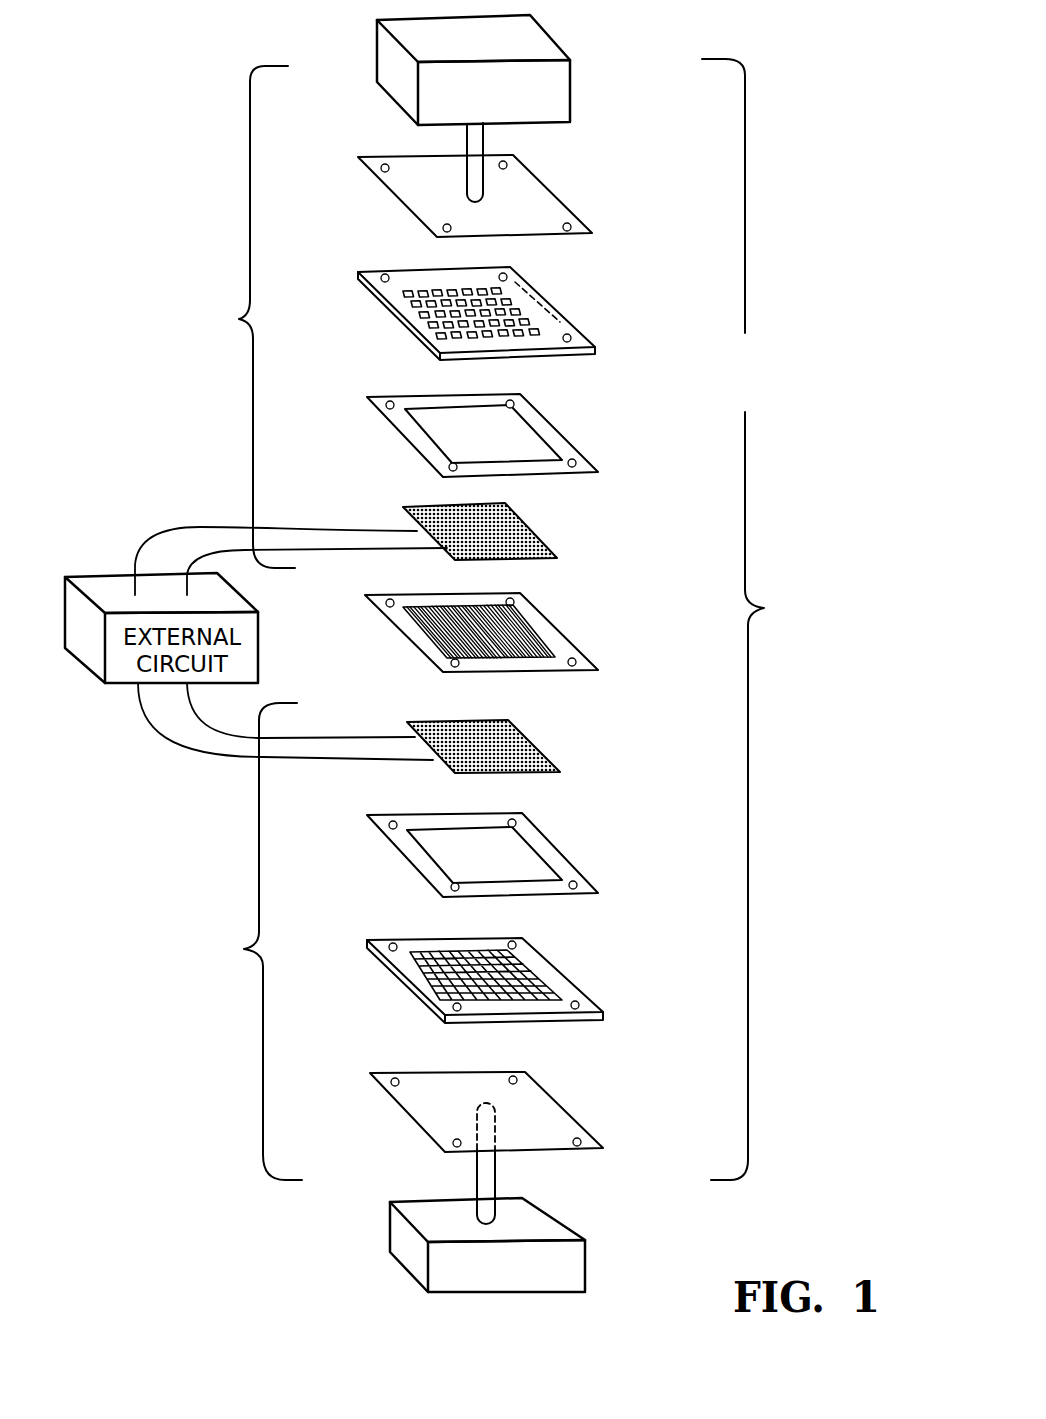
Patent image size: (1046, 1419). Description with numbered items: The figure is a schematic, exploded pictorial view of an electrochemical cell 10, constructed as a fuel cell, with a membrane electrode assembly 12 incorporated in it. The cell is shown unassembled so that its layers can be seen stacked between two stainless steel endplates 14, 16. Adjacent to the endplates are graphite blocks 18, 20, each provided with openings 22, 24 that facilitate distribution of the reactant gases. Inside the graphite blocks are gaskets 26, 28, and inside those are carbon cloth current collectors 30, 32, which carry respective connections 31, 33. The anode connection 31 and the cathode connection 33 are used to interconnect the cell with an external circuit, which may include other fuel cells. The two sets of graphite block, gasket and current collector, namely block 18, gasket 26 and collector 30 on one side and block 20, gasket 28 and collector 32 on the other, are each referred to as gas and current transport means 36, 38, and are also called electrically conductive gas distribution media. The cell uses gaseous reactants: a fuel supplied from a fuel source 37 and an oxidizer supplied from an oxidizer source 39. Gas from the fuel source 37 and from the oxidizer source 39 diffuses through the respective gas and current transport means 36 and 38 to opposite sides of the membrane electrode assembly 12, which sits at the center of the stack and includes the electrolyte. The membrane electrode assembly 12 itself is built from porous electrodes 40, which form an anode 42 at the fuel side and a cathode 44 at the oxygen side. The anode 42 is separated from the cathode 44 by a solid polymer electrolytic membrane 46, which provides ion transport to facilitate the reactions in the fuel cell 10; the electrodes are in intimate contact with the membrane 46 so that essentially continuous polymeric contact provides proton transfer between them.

The electrochemical cell 10 is at (764, 608).
The membrane electrode assembly 12 is at (530, 631).
The stainless steel endplate 14 is at (543, 1107).
The stainless steel endplate 16 is at (560, 212).
The graphite block 18 is at (528, 966).
The graphite block 20 is at (520, 309).
The openings 22 is at (510, 957).
The openings 24 is at (522, 287).
The gasket 26 is at (557, 858).
The gasket 28 is at (553, 442).
The carbon cloth current collector 30 is at (533, 747).
The anode connection 31 is at (362, 760).
The carbon cloth current collector 32 is at (523, 533).
The cathode connection 33 is at (343, 552).
The gas and current transport means 36 is at (244, 949).
The fuel source 37 is at (523, 1213).
The gas and current transport means 38 is at (239, 319).
The oxidizer source 39 is at (560, 83).
The porous electrodes 40 is at (541, 631).
The anode 42 is at (520, 630).
The cathode 44 is at (522, 640).
The solid polymer electrolytic membrane 46 is at (592, 652).